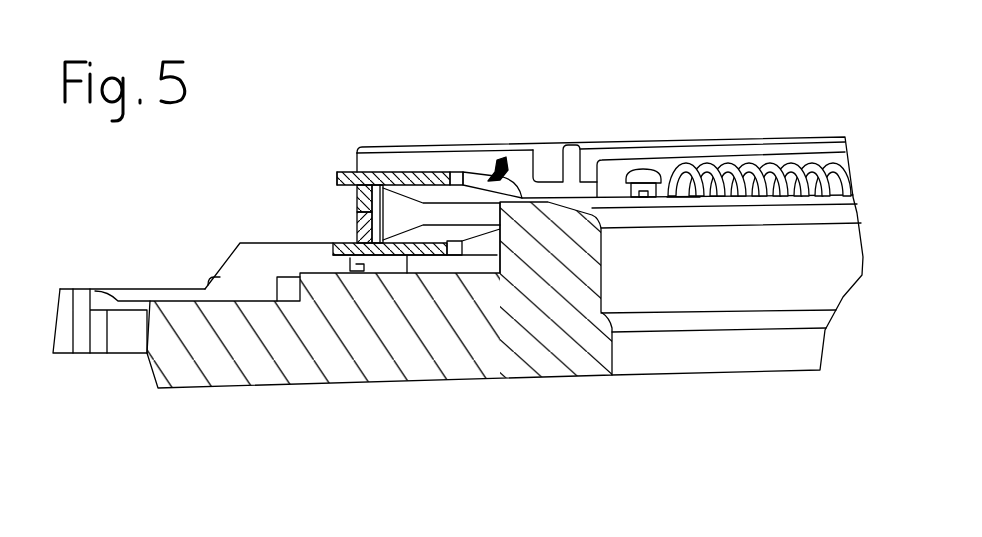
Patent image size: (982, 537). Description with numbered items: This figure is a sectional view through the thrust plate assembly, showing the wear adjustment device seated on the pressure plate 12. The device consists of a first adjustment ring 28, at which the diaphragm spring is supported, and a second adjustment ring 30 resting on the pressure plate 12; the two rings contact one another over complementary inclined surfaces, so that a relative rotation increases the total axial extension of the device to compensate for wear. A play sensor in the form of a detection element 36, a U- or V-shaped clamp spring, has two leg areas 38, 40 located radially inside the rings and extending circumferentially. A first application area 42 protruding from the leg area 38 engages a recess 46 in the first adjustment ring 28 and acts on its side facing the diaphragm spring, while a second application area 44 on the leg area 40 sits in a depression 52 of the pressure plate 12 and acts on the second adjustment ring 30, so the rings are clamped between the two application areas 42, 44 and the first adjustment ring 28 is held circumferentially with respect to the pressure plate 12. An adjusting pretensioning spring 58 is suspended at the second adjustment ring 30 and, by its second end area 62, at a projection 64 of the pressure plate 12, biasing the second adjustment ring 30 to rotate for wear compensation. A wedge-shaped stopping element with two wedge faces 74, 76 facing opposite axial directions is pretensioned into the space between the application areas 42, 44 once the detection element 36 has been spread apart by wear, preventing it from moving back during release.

The pressure plate 12 is at (843, 297).
The first adjustment ring 28 is at (356, 191).
The second adjustment ring 30 is at (356, 226).
The detection element 36 is at (507, 156).
The leg area 38 is at (462, 172).
The leg area 40 is at (477, 242).
The first application area 42 is at (368, 172).
The second application area 44 is at (380, 192).
The recess 46 is at (357, 156).
The depression 52 is at (360, 273).
The adjusting pretensioning spring 58 is at (752, 163).
The second end area 62 is at (680, 194).
The projection 64 is at (645, 168).
The wedge face 74 is at (378, 190).
The wedge face 76 is at (358, 263).